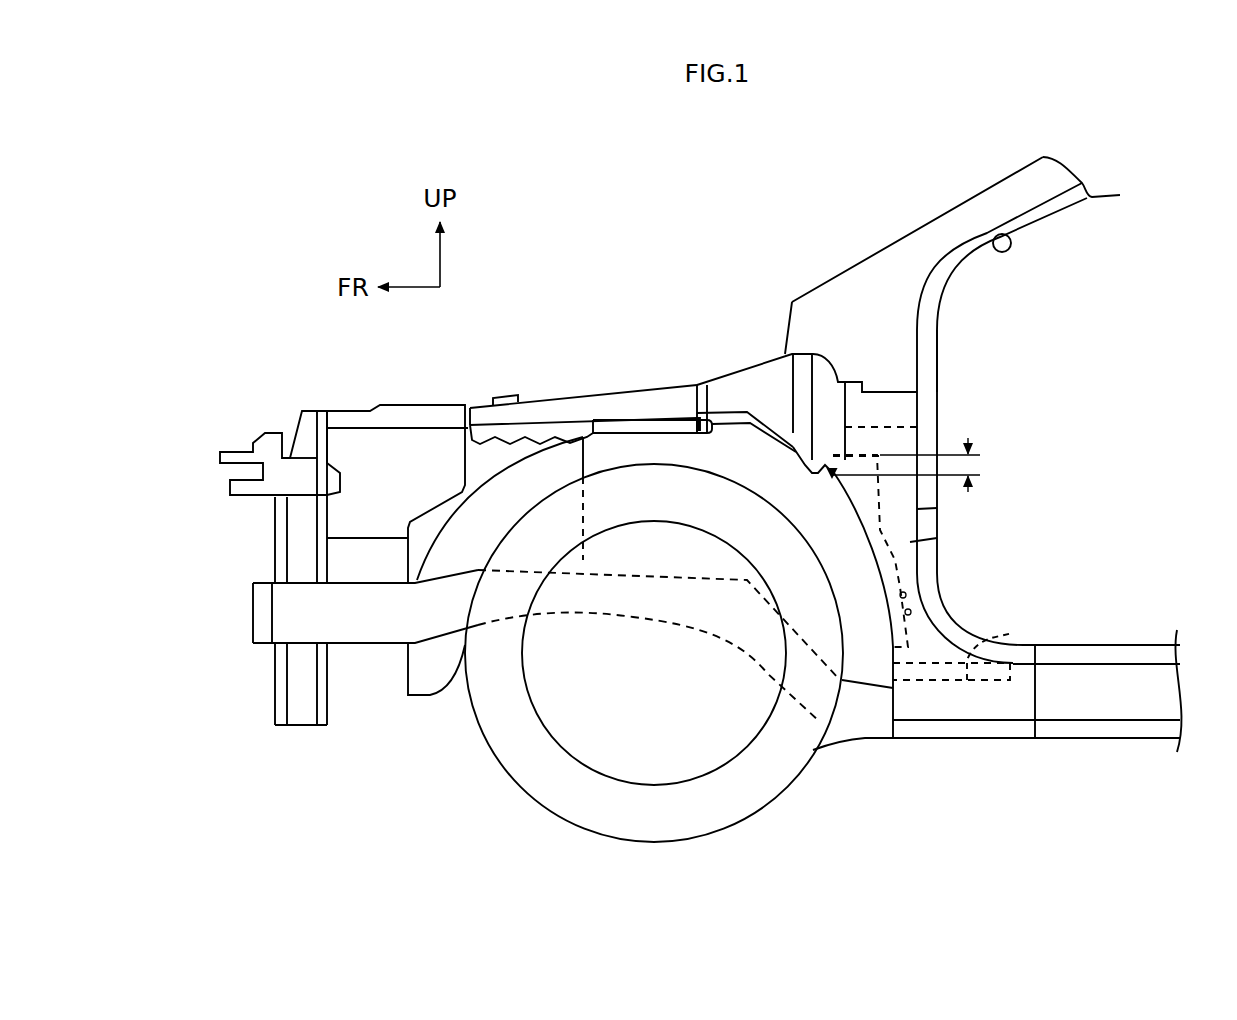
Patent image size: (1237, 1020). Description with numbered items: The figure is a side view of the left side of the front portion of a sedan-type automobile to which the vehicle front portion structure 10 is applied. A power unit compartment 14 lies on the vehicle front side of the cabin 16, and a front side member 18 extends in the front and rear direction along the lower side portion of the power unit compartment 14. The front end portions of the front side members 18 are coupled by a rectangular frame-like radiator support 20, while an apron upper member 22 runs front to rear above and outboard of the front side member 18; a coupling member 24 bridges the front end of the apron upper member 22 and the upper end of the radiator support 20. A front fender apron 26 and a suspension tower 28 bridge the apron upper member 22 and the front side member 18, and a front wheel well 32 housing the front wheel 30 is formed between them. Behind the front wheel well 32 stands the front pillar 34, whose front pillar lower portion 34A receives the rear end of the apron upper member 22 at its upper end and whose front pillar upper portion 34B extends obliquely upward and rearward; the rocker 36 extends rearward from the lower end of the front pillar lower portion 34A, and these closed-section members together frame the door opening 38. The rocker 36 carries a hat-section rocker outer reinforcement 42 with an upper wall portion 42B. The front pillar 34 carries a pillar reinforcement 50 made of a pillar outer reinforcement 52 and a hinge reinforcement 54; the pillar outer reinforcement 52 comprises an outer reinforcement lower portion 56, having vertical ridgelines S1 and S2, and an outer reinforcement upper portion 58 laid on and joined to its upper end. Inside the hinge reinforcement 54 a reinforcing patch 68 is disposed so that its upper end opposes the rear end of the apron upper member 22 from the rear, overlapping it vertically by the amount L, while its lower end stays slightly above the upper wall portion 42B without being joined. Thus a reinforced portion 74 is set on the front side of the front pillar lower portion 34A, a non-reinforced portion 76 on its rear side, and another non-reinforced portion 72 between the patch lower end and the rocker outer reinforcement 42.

The vehicle front portion structure 10 is at (690, 230).
The power unit compartment 14 is at (420, 474).
The cabin 16 is at (1150, 469).
The front side member 18 is at (645, 618).
The radiator support 20 is at (275, 530).
The apron upper member 22 is at (587, 398).
The coupling member 24 is at (405, 405).
The front fender apron 26 is at (503, 448).
The suspension tower 28 is at (680, 442).
The front wheel 30 is at (482, 732).
The front wheel well 32 is at (737, 440).
The front pillar 34 is at (1018, 365).
The front pillar lower portion 34A is at (988, 474).
The front pillar upper portion 34B is at (955, 321).
The rocker 36 is at (1152, 624).
The door opening 38 is at (1008, 243).
The rocker outer reinforcement 42 is at (1108, 644).
The upper wall portion 42B is at (1013, 633).
The pillar reinforcement 50 is at (916, 479).
The pillar outer reinforcement 52 is at (860, 263).
The hinge reinforcement 54 is at (973, 687).
The outer reinforcement lower portion 56 is at (966, 612).
The outer reinforcement upper portion 58 is at (950, 283).
The reinforcing patch 68 is at (907, 570).
The non-reinforced portion 72 is at (893, 648).
The reinforced portion 74 is at (880, 548).
The non-reinforced portion 76 is at (943, 538).
The ridgeline S1 is at (843, 497).
The ridgeline S2 is at (937, 509).
The amount of overlap L is at (916, 465).